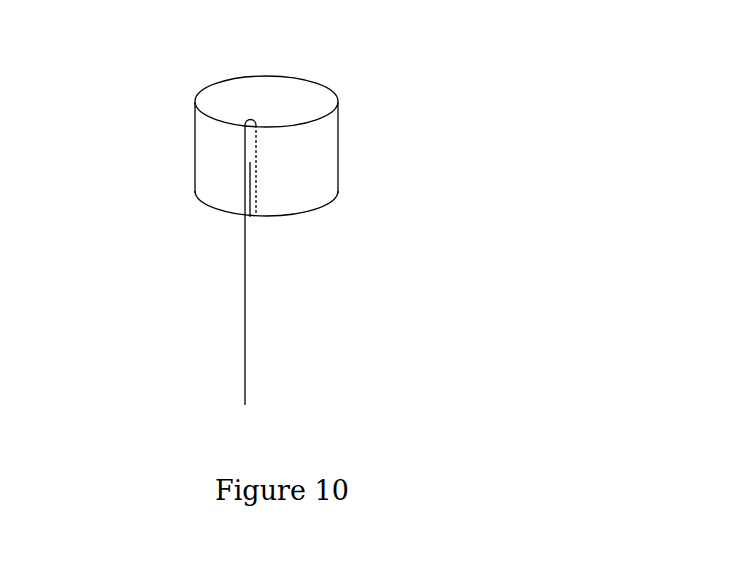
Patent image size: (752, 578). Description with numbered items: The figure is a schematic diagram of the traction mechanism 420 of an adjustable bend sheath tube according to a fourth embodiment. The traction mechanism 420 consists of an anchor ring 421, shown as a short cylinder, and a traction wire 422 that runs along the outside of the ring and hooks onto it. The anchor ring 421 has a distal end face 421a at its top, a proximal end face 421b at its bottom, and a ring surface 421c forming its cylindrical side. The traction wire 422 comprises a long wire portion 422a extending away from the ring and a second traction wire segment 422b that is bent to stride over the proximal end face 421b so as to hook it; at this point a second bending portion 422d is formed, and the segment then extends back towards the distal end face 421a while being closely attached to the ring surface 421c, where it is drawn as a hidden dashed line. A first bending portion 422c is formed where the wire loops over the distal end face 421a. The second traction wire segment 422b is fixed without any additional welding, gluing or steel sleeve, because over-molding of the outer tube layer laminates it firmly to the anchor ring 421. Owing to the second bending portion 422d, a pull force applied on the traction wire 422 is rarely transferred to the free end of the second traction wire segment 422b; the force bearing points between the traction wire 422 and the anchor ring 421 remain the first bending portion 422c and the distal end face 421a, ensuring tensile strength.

The traction mechanism 420 is at (282, 203).
The anchor ring 421 is at (282, 151).
The distal end face 421a is at (330, 117).
The proximal end face 421b is at (338, 196).
The ring surface 421c is at (205, 160).
The traction wire 422 is at (298, 222).
The wire main portion 422a is at (245, 323).
The second traction wire segment 422b is at (257, 167).
The first bending portion 422c is at (250, 120).
The second bending portion 422d is at (250, 217).